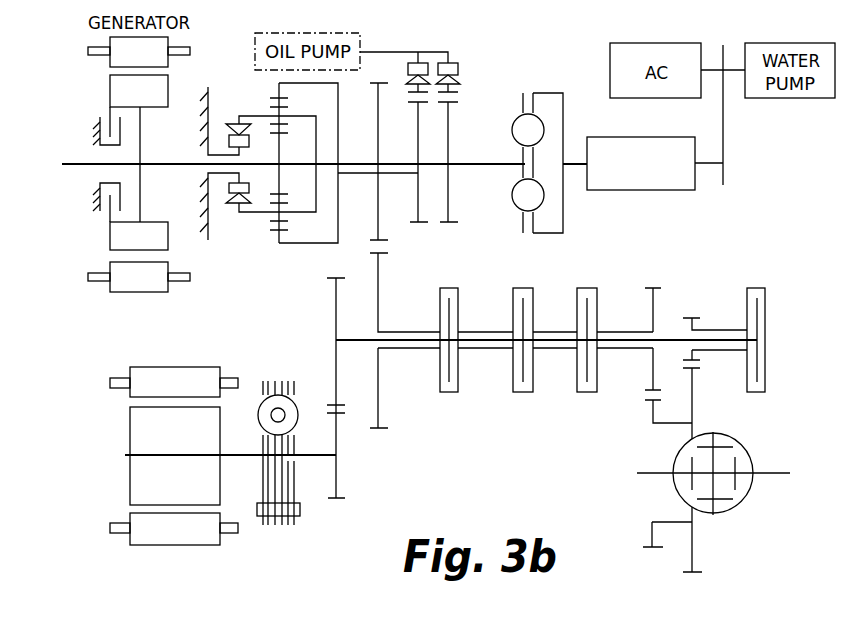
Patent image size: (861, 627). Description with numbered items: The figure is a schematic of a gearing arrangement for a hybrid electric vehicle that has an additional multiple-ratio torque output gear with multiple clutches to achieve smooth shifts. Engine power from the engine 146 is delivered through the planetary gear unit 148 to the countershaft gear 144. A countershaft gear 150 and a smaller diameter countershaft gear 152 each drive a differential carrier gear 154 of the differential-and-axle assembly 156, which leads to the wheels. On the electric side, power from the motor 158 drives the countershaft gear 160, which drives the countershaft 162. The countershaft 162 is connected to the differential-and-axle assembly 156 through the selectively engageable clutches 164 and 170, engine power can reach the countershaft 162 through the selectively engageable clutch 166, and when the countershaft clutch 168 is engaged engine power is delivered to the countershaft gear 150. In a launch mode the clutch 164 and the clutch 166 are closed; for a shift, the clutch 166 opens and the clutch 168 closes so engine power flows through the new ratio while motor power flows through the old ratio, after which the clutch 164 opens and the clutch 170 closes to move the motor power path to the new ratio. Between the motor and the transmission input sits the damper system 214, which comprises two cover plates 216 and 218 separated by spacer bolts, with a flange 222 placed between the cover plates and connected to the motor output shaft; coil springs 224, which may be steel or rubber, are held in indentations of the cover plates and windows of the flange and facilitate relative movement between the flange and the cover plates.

The countershaft gear 144 is at (380, 285).
The engine 146 is at (668, 190).
The planetary gear unit 148 is at (262, 113).
The countershaft gear 150 is at (656, 298).
The countershaft gear 152 is at (697, 318).
The differential carrier gear 154 is at (694, 548).
The differential-and-axle assembly 156 is at (748, 447).
The motor 158 is at (138, 429).
The countershaft gear 160 is at (335, 323).
The countershaft 162 is at (654, 350).
The clutch 164 is at (762, 380).
The clutch 166 is at (449, 392).
The countershaft clutch 168 is at (533, 298).
The clutch 170 is at (597, 298).
The damper system 214 is at (283, 488).
The cover plate 216 is at (297, 498).
The cover plate 218 is at (262, 497).
The flange 222 is at (278, 494).
The coil springs 224 is at (258, 416).